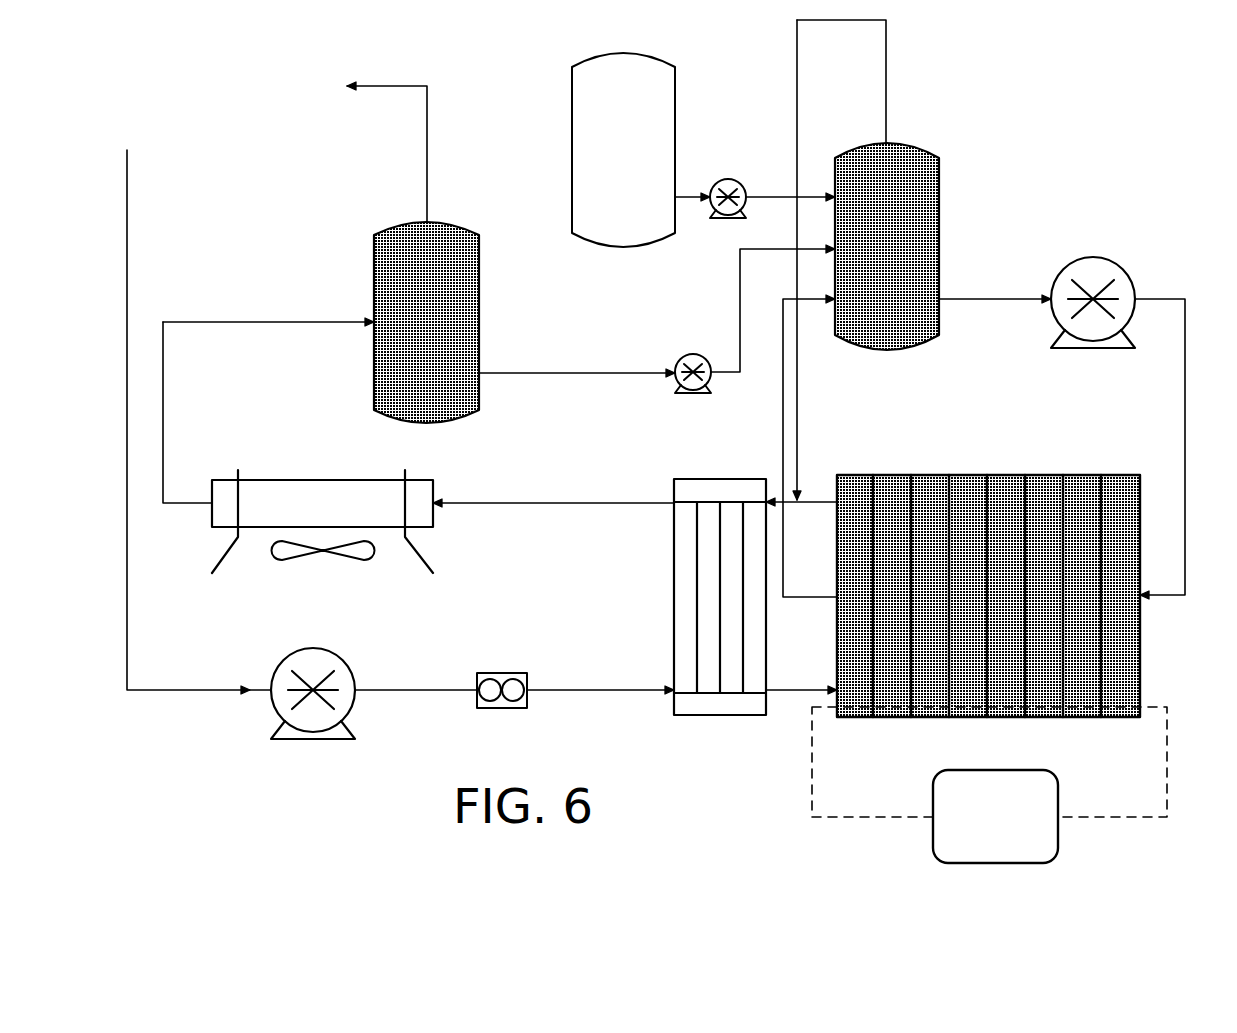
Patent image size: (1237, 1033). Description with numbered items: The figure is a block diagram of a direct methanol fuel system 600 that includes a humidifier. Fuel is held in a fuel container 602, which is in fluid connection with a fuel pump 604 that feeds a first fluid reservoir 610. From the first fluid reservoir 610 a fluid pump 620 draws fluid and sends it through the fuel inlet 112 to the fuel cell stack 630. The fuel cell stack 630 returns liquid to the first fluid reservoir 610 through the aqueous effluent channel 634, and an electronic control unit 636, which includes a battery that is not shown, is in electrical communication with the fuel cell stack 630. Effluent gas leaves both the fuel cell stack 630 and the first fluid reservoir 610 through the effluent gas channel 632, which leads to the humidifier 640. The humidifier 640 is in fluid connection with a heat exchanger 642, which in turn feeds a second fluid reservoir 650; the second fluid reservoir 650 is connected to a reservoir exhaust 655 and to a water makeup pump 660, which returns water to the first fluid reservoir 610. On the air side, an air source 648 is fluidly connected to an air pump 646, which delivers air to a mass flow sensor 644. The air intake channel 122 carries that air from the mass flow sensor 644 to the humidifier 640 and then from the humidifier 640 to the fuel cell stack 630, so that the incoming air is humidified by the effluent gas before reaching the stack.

The direct methanol fuel system 600 is at (1020, 205).
The fuel container 602 is at (675, 68).
The fuel pump 604 is at (725, 222).
The first fluid reservoir 610 is at (935, 155).
The fluid pump 620 is at (1100, 255).
The fuel cell stack 630 is at (1000, 478).
The effluent gas channel 632 is at (815, 500).
The aqueous effluent channel 634 is at (833, 597).
The electronic control unit 636 is at (930, 835).
The humidifier 640 is at (673, 616).
The heat exchanger 642 is at (290, 478).
The mass flow sensor 644 is at (497, 672).
The air pump 646 is at (275, 708).
The air source 648 is at (128, 213).
The second fluid reservoir 650 is at (479, 412).
The reservoir exhaust 655 is at (409, 85).
The water makeup pump 660 is at (695, 353).
The fuel inlet 112 is at (1165, 597).
The air intake channel 122 is at (620, 693).